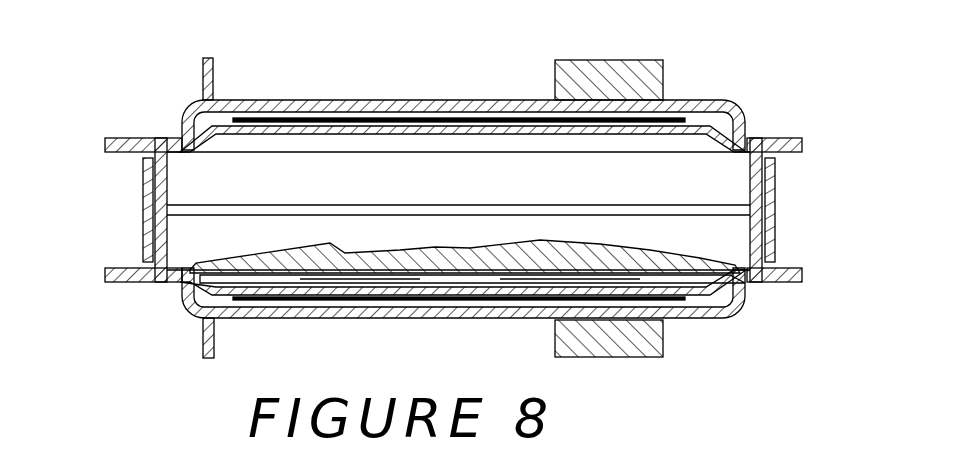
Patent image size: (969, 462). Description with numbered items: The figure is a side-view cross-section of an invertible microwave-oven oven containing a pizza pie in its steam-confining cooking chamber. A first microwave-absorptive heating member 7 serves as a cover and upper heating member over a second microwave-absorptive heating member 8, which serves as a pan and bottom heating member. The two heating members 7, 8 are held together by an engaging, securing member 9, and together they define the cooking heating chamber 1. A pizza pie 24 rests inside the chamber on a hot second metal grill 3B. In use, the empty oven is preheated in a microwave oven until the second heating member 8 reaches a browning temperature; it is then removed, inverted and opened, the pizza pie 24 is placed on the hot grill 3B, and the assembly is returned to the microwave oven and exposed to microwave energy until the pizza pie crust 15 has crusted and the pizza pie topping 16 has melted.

The first microwave-absorptive heating member 7 is at (758, 91).
The second microwave-absorptive heating member 8 is at (765, 317).
The cooking heating chamber 1 is at (698, 165).
The pizza pie 24 is at (651, 246).
The second metal grill 3B is at (147, 257).
The engaging, securing member 9 is at (146, 187).
The pizza pie topping 16 is at (713, 258).
The pizza pie crust 15 is at (708, 272).